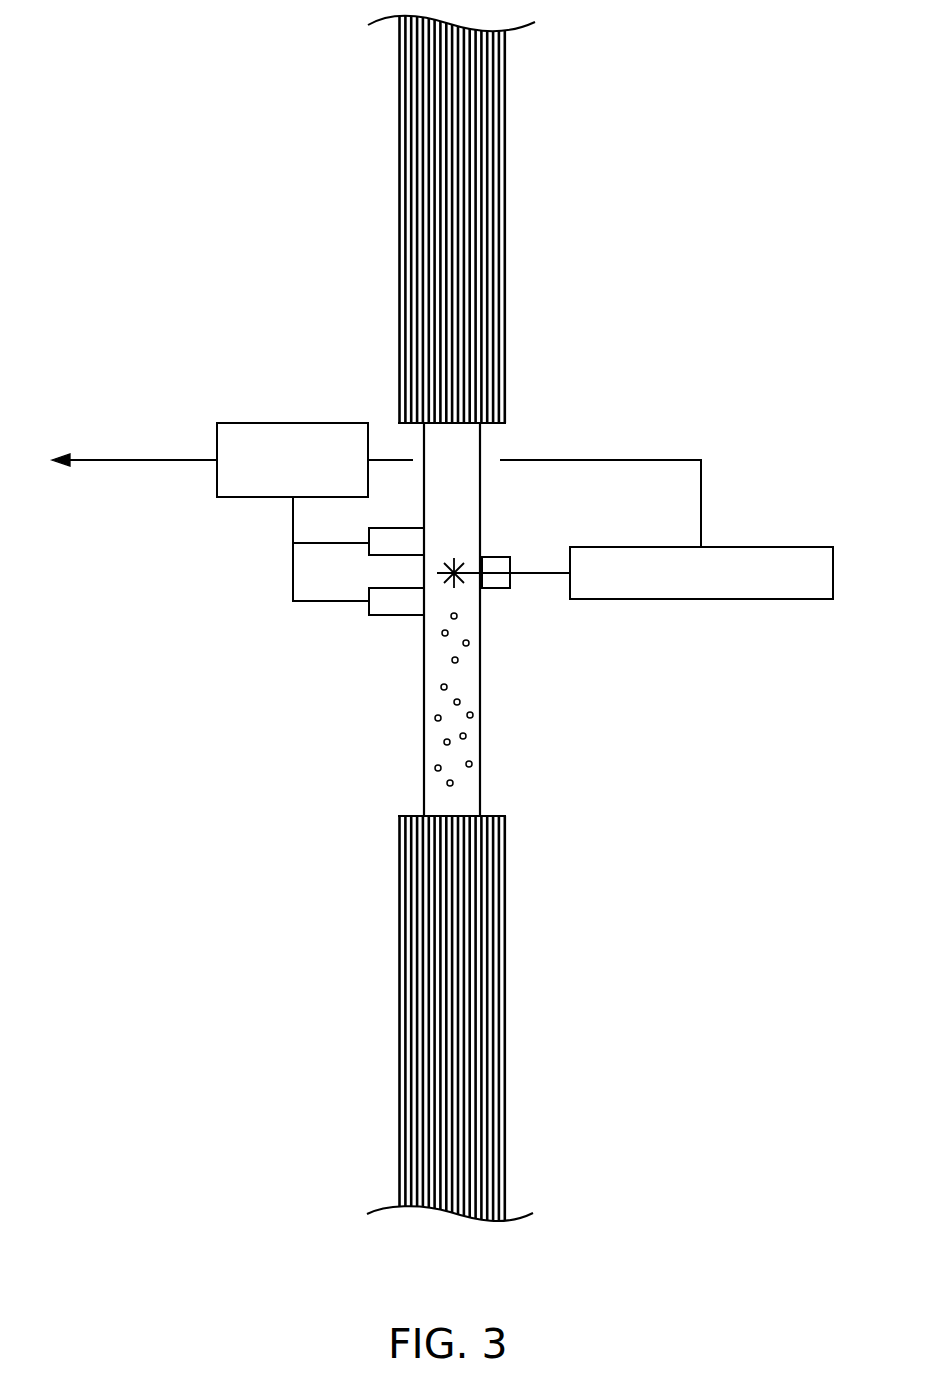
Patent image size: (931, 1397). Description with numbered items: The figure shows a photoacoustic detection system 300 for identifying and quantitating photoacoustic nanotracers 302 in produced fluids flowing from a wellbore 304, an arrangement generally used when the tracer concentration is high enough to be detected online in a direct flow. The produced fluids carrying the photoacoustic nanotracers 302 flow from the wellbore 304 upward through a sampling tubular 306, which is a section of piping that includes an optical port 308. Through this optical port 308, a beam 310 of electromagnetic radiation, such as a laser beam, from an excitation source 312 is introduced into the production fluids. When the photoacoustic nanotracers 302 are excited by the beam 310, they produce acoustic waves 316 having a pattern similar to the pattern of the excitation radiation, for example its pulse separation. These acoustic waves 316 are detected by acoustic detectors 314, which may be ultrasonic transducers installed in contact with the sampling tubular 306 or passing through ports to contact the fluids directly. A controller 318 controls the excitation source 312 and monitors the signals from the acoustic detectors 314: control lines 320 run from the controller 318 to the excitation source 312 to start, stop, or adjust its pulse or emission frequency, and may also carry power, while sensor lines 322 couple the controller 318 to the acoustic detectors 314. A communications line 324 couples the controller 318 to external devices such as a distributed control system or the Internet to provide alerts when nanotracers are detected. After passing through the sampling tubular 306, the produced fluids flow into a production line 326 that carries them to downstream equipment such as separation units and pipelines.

The photoacoustic detection system 300 is at (472, 1309).
The photoacoustic nanotracers 302 is at (465, 733).
The wellbore 304 is at (398, 1060).
The sampling tubular 306 is at (424, 760).
The optical port 308 is at (495, 590).
The beam 310 is at (530, 572).
The excitation source 312 is at (783, 547).
The acoustic detectors 314 is at (378, 617).
The acoustic waves 316 is at (457, 554).
The controller 318 is at (292, 423).
The control lines 320 is at (663, 460).
The sensor lines 322 is at (293, 560).
The communications line 324 is at (125, 460).
The production line 326 is at (398, 238).